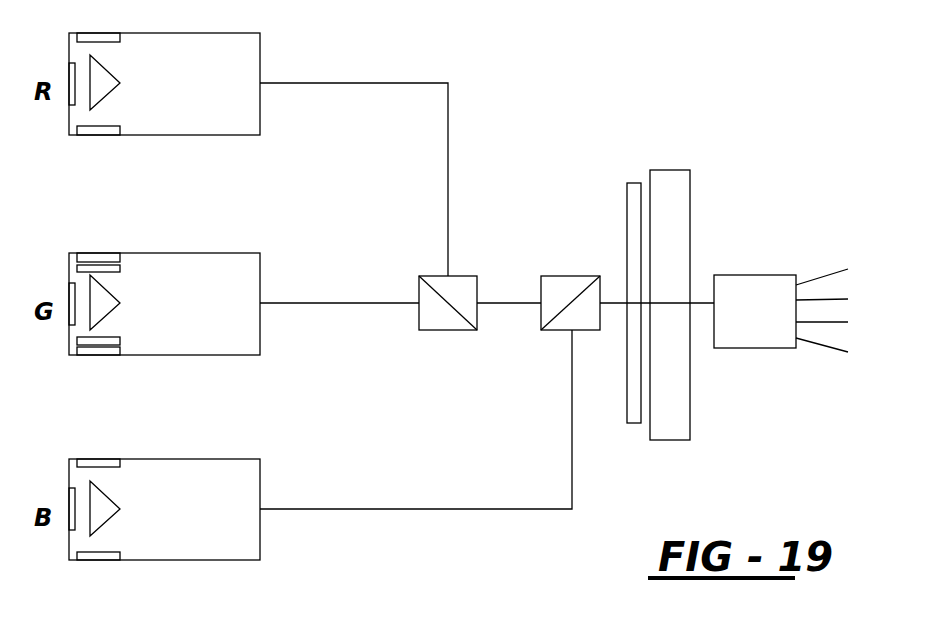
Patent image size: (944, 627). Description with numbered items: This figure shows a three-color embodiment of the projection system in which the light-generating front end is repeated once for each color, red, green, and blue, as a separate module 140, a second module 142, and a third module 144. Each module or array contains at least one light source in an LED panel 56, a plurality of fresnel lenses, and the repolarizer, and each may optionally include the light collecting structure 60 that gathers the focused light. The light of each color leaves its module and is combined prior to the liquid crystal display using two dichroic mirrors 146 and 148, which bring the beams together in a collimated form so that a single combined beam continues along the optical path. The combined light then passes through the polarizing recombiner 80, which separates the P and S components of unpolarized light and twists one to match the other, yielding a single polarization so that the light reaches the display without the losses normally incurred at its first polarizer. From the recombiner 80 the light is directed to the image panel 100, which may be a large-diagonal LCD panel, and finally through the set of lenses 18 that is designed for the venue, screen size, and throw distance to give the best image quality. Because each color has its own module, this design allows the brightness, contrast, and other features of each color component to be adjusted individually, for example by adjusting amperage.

The set of lenses 18 is at (781, 310).
The LED panel 56 is at (88, 38).
The light collecting structure 60 is at (121, 82).
The polarizing recombiner 80 is at (633, 183).
The image panel 100 is at (663, 441).
The red light source module 140 is at (246, 56).
The green light source module 142 is at (246, 276).
The blue light source module 144 is at (246, 482).
The dichroic mirror 146 is at (440, 331).
The dichroic mirror 148 is at (543, 331).